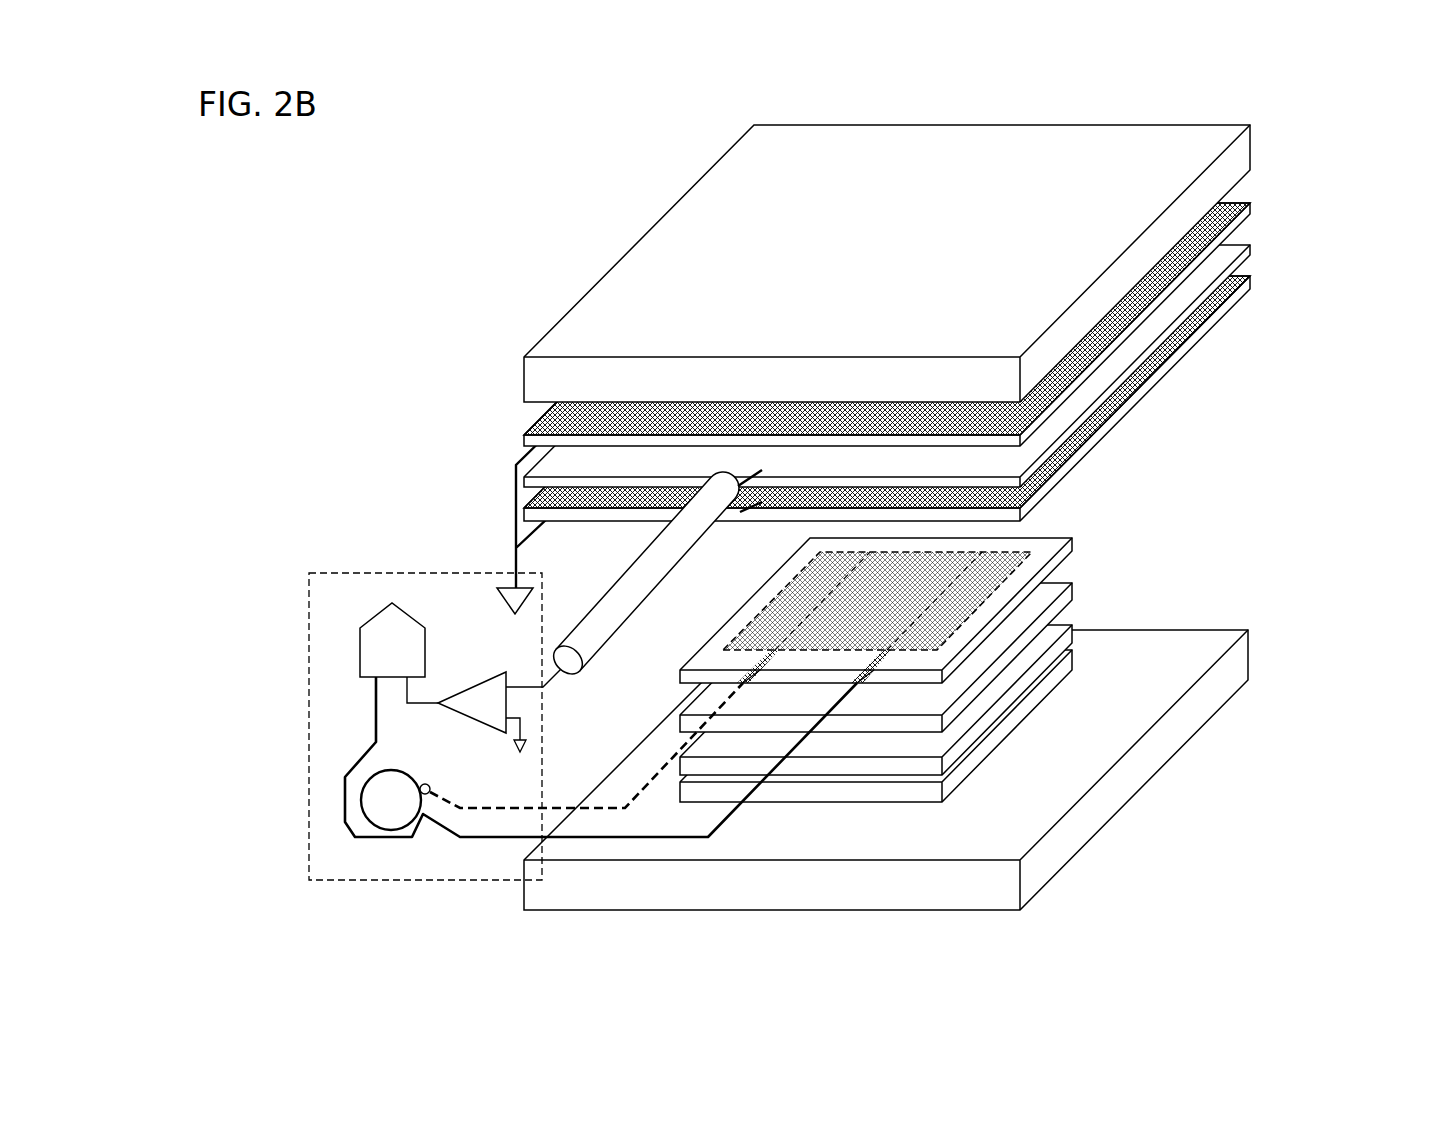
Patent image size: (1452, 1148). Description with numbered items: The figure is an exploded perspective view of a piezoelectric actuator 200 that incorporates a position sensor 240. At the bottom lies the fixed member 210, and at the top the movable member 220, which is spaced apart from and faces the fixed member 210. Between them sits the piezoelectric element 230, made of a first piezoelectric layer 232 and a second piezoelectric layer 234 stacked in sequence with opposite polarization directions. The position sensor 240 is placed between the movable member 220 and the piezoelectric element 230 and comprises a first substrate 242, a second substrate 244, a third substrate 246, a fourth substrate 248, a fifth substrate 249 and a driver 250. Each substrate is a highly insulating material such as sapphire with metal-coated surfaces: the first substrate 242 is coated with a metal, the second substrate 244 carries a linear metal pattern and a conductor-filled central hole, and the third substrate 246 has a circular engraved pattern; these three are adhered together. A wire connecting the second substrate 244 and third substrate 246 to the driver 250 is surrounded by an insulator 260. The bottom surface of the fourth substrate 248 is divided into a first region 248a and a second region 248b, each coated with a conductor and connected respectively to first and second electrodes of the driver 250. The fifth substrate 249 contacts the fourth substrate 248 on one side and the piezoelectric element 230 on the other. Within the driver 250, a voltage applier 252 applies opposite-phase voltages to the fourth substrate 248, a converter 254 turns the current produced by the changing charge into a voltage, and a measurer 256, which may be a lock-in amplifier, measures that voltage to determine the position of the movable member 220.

The piezoelectric actuator 200 is at (538, 146).
The fixed member 210 is at (1075, 832).
The movable member 220 is at (538, 380).
The piezoelectric element 230 is at (1024, 708).
The first piezoelectric layer 232 is at (1072, 636).
The second piezoelectric layer 234 is at (1072, 662).
The position sensor 240 is at (922, 402).
The first substrate 242 is at (1067, 393).
The second substrate 244 is at (1060, 441).
The third substrate 246 is at (1032, 508).
The fourth substrate 248 is at (909, 626).
The first region 248a is at (792, 602).
The second region 248b is at (960, 602).
The fifth substrate 249 is at (1068, 598).
The driver 250 is at (437, 573).
The voltage applier 252 is at (377, 773).
The converter 254 is at (482, 680).
The measurer 256 is at (360, 656).
The insulator 260 is at (626, 600).